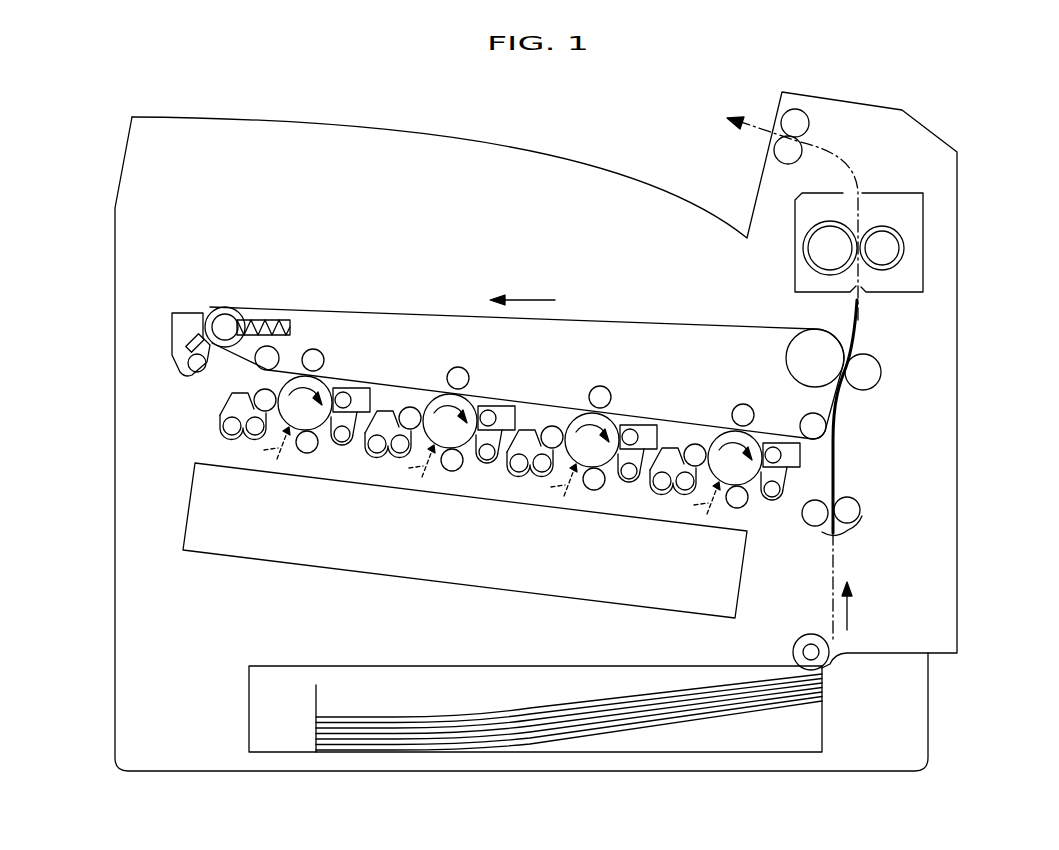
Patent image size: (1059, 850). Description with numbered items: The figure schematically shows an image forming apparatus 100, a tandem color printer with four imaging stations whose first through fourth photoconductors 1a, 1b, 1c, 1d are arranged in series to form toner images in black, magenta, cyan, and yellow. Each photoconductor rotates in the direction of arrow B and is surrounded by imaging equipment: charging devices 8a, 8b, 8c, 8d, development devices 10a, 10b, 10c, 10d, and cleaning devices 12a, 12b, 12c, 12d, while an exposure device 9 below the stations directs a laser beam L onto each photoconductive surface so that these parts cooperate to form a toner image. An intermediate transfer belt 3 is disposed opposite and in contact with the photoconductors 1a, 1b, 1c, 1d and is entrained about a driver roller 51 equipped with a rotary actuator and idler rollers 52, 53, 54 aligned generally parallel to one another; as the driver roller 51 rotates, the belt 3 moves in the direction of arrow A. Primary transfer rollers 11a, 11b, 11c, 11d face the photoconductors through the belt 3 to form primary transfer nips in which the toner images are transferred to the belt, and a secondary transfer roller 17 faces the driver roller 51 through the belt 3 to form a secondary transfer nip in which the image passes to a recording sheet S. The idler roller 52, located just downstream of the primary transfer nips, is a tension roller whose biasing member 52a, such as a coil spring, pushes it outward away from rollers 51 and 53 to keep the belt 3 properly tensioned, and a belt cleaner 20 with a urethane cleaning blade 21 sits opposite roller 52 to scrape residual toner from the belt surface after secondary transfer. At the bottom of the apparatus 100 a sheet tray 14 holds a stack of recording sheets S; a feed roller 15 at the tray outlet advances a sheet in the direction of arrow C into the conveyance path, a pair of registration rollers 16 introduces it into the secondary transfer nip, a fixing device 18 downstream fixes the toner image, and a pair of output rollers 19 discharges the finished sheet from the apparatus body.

The image forming apparatus 100 is at (1016, 102).
The first photoconductor 1a is at (725, 472).
The second photoconductor 1b is at (582, 454).
The third photoconductor 1c is at (440, 435).
The fourth photoconductor 1d is at (302, 417).
The intermediate transfer belt 3 is at (640, 318).
The charging device 8a is at (735, 500).
The charging device 8b is at (592, 482).
The charging device 8c is at (450, 463).
The charging device 8d is at (305, 445).
The exposure device 9 is at (190, 500).
The development device 10a is at (673, 503).
The development device 10b is at (530, 485).
The development device 10c is at (388, 466).
The development device 10d is at (243, 448).
The primary transfer roller 11a is at (762, 400).
The primary transfer roller 11b is at (619, 382).
The primary transfer roller 11c is at (476, 363).
The primary transfer roller 11d is at (332, 345).
The cleaning device 12a is at (753, 528).
The cleaning device 12b is at (610, 510).
The cleaning device 12c is at (468, 491).
The cleaning device 12d is at (323, 473).
The sheet tray 14 is at (655, 752).
The feed roller 15 is at (795, 646).
The registration roller 16 is at (850, 526).
The secondary transfer roller 17 is at (882, 375).
The fixing device 18 is at (890, 193).
The output rollers 19 is at (806, 157).
The belt cleaner 20 is at (172, 328).
The cleaning blade 21 is at (200, 340).
The driver roller 51 is at (786, 356).
The idler roller 52 is at (228, 320).
The biasing member 52a is at (268, 320).
The idler roller 53 is at (255, 368).
The idler roller 54 is at (828, 433).
The recording sheet S is at (862, 327).